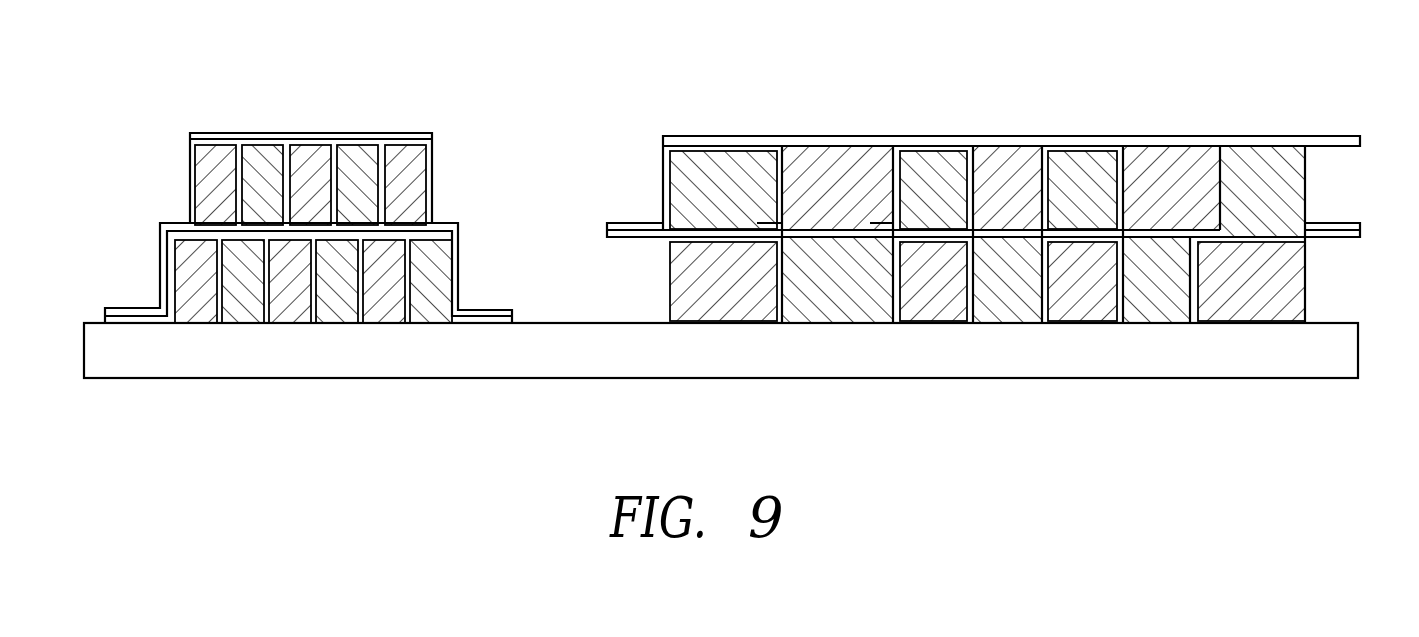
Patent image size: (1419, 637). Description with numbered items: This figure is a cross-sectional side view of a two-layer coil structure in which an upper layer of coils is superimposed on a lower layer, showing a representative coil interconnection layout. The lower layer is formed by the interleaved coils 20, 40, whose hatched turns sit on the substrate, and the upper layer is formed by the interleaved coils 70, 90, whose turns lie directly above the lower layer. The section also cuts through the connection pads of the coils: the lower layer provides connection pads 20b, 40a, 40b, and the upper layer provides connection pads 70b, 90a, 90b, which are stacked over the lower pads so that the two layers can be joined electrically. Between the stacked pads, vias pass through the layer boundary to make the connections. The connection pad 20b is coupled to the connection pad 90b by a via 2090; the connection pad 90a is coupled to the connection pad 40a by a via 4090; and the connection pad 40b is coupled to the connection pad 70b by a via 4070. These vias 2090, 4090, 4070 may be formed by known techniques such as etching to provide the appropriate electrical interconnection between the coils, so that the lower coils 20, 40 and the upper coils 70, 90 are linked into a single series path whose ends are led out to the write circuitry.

The interleaved coil 20 is at (198, 308).
The interleaved coil 40 is at (246, 308).
The interleaved coil 70 is at (230, 150).
The interleaved coil 90 is at (350, 150).
The connection pad 20b is at (834, 288).
The connection pad 40b is at (727, 288).
The connection pad 70b is at (681, 165).
The connection pad 90b is at (877, 172).
The connection pad 40a is at (1264, 290).
The connection pad 90a is at (1290, 175).
The via 4070 is at (712, 232).
The via 2090 is at (842, 235).
The via 4090 is at (1262, 235).